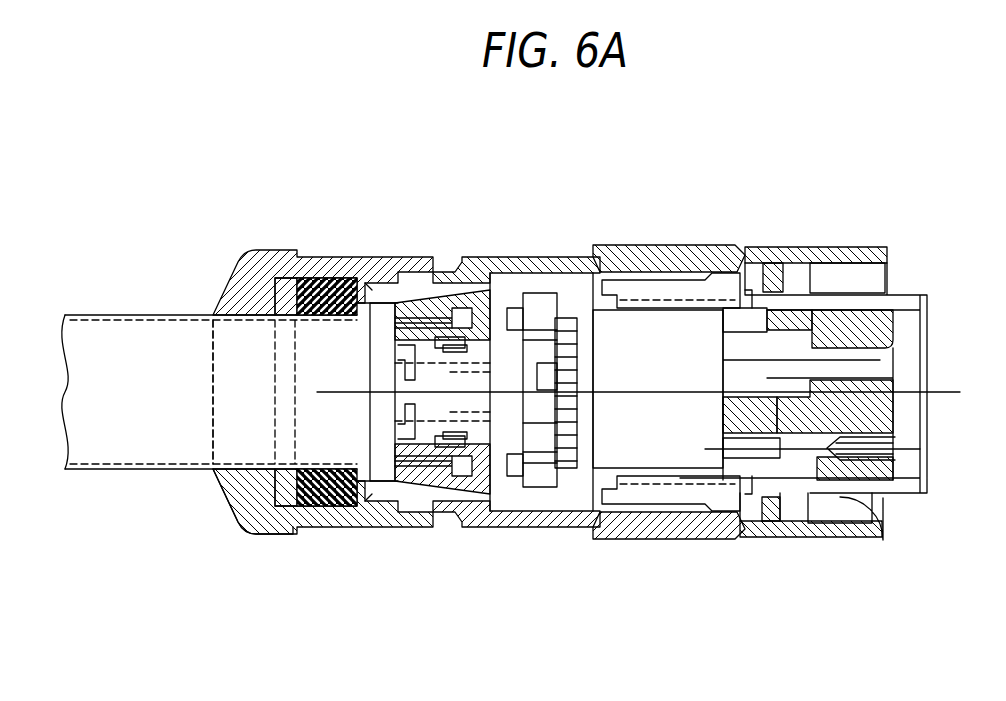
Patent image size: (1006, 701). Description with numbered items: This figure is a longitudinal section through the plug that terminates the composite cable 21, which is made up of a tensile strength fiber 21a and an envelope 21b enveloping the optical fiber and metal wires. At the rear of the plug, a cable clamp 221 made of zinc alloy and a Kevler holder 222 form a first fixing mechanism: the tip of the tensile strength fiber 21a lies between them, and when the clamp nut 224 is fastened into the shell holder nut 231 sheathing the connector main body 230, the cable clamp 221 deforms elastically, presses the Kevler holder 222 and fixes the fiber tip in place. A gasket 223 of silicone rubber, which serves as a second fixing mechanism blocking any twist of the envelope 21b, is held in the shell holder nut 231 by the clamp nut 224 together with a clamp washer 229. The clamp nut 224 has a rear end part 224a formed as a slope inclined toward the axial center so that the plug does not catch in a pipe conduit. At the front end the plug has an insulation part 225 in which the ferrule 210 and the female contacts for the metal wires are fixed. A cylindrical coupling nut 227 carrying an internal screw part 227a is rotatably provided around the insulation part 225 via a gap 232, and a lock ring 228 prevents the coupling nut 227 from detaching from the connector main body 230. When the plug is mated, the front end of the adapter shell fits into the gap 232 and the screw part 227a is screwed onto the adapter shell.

The composite cable 21 is at (122, 307).
The tensile strength fiber 21a is at (380, 283).
The envelope 21b is at (168, 315).
The ferrule 210 is at (815, 325).
The cable clamp 221 is at (447, 283).
The Kevler holder 222 is at (472, 262).
The gasket 223 is at (320, 262).
The clamp nut 224 is at (250, 262).
The rear end part 224a is at (247, 517).
The insulation part 225 is at (885, 300).
The coupling nut 227 is at (813, 249).
The internal screw part 227a is at (882, 498).
The lock ring 228 is at (775, 265).
The clamp washer 229 is at (287, 264).
The connector main body 230 is at (675, 272).
The shell holder nut 231 is at (578, 257).
The gap 232 is at (885, 262).